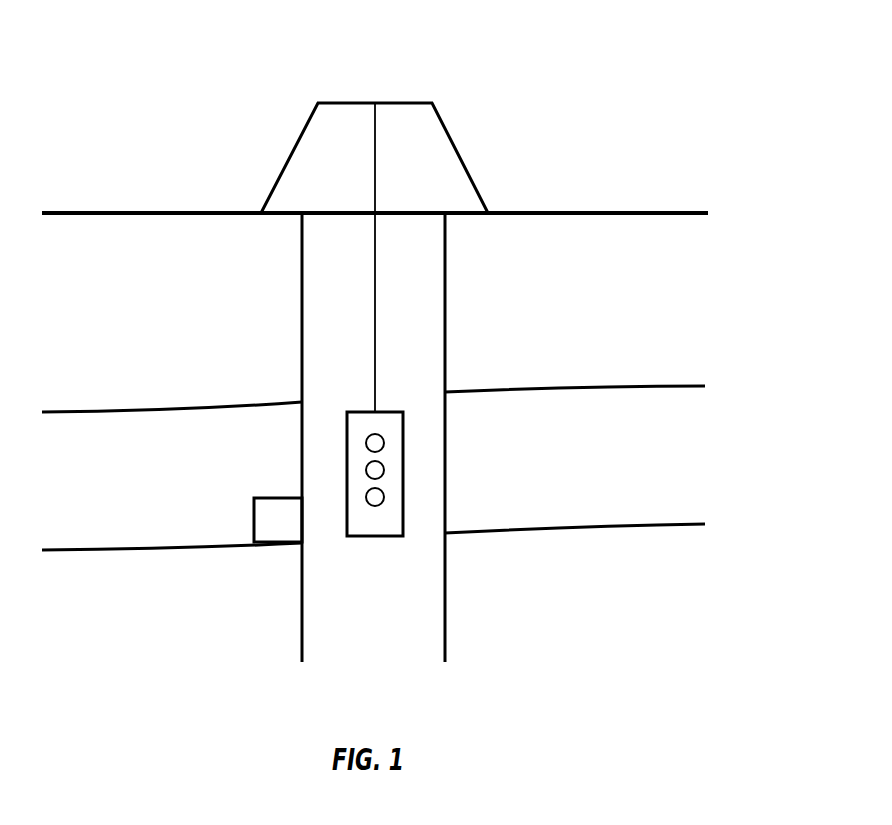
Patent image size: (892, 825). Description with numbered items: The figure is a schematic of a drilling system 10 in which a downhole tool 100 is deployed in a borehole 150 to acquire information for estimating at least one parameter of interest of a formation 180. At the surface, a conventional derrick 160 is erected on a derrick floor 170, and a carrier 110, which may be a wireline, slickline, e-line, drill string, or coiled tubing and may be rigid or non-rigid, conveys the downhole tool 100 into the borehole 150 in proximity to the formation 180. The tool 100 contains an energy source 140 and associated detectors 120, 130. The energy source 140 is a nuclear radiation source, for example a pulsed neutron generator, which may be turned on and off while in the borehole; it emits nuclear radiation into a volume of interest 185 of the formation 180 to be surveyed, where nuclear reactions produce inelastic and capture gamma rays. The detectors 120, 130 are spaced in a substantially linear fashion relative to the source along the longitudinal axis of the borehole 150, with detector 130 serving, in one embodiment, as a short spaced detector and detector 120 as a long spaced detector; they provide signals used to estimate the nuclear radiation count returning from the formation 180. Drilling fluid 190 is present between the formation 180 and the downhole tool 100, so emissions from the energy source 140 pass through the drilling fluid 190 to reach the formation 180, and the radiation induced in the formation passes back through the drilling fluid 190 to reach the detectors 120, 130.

The drilling system 10 is at (193, 54).
The downhole tool 100 is at (403, 422).
The carrier 110 is at (375, 312).
The detector 120 is at (385, 443).
The detector 130 is at (385, 470).
The energy source 140 is at (385, 497).
The borehole 150 is at (445, 325).
The derrick 160 is at (465, 155).
The derrick floor 170 is at (482, 226).
The formation 180 is at (593, 402).
The volume of interest 185 is at (254, 513).
The drilling fluid 190 is at (428, 534).